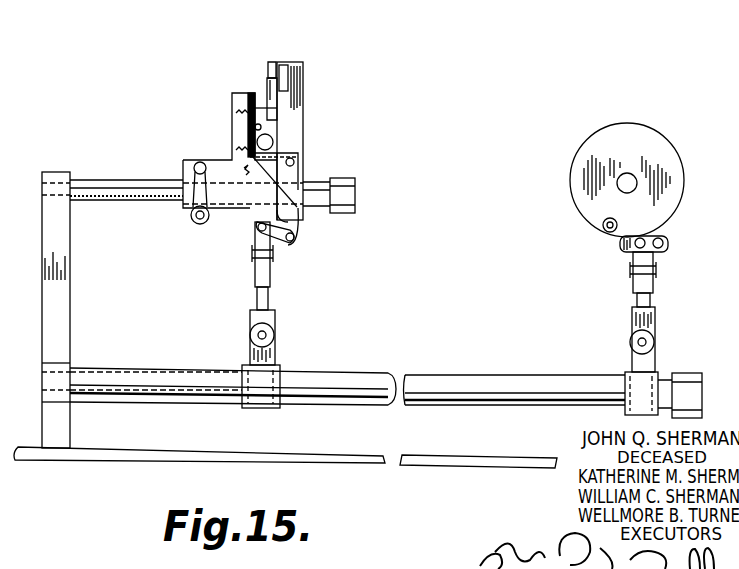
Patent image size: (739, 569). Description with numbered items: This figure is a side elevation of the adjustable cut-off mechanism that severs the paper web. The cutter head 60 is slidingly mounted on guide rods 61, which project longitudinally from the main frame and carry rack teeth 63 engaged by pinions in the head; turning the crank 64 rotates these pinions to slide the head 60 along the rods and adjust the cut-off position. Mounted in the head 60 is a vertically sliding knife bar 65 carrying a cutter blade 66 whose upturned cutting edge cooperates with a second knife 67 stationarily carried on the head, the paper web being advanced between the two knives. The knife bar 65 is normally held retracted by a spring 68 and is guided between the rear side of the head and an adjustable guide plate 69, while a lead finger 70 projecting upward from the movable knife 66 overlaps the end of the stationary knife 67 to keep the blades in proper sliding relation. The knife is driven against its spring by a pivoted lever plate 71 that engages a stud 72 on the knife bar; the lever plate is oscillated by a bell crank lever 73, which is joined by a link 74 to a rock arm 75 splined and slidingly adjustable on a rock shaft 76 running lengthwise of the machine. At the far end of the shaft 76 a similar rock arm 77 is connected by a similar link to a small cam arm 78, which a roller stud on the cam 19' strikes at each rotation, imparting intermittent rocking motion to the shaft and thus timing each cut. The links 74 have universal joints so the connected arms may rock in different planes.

The cam 19' is at (627, 163).
The head 60 is at (183, 160).
The guide rods 61 is at (100, 180).
The rack teeth 63 is at (113, 207).
The crank 64 is at (200, 165).
The knife bar 65 is at (267, 100).
The cutter blade 66 is at (272, 108).
The second knife 67 is at (283, 82).
The spring 68 is at (252, 172).
The guide plate 69 is at (252, 102).
The lead finger 70 is at (270, 78).
The lever plate 71 is at (293, 175).
The stud 72 is at (270, 140).
The bell crank lever 73 is at (298, 222).
The link 74 is at (268, 250).
The rock arm 75 is at (273, 318).
The rock shaft 76 is at (335, 378).
The rock arm 77 is at (632, 322).
The cam arm 78 is at (620, 246).